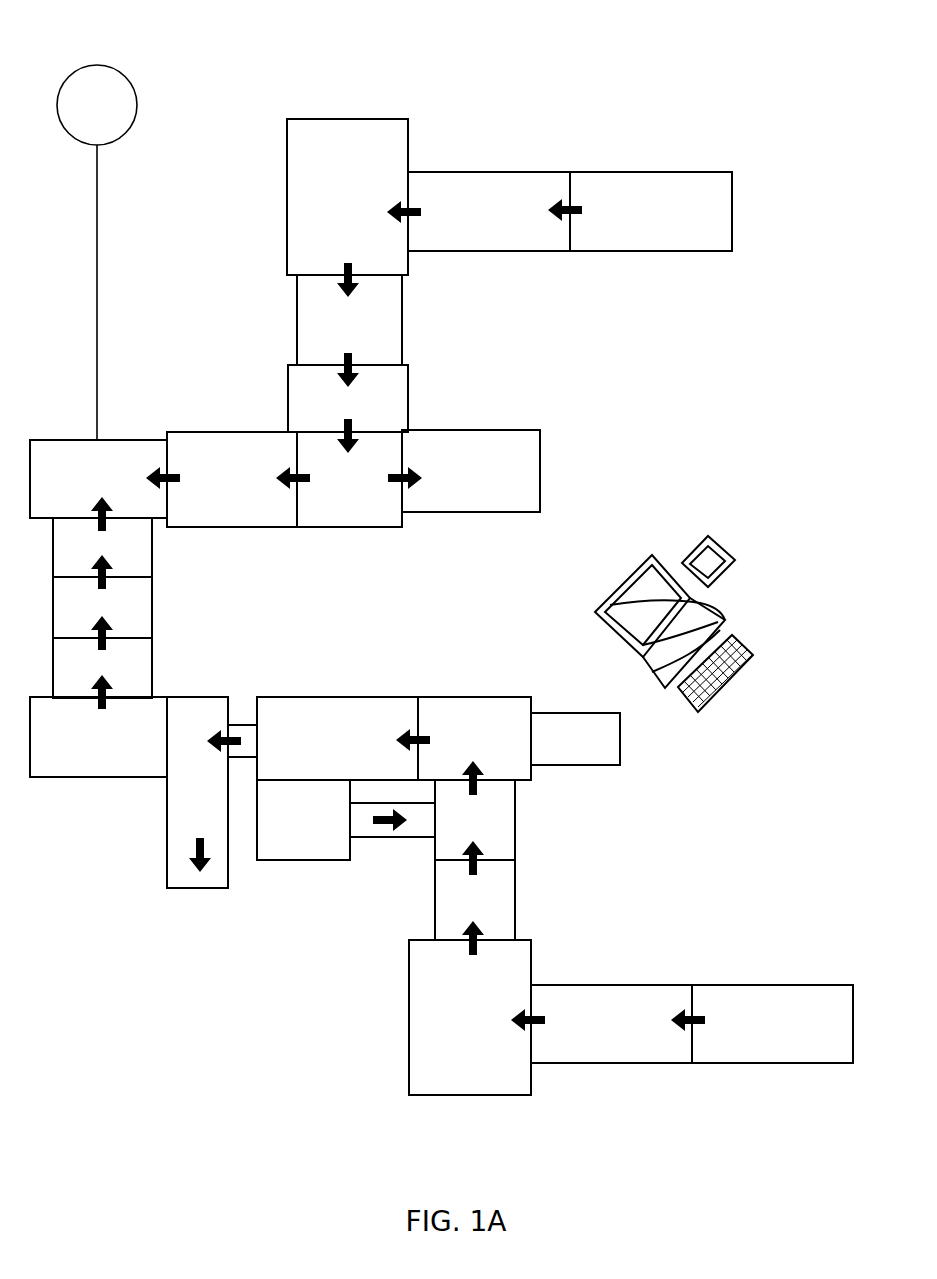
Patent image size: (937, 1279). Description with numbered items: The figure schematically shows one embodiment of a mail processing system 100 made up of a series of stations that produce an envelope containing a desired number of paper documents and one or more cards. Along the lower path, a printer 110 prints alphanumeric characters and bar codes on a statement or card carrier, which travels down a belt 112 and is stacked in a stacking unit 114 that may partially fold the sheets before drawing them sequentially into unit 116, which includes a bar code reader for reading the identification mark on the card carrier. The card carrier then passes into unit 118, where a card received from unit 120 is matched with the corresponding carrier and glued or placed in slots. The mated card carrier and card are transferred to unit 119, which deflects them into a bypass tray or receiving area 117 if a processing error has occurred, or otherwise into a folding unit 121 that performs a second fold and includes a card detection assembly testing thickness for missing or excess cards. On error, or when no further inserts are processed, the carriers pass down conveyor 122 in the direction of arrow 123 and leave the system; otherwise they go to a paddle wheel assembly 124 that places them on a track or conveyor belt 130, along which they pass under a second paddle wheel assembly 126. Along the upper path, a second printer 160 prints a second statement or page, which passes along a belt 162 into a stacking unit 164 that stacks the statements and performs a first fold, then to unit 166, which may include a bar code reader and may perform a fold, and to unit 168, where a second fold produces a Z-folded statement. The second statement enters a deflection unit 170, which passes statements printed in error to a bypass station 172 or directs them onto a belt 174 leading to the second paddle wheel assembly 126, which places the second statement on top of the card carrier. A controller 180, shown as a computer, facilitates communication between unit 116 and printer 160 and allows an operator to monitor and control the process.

The mail processing system 100 is at (692, 124).
The printer 110 is at (756, 1034).
The belt 112 is at (595, 1034).
The stacking unit 114 is at (453, 1029).
The unit 116 is at (456, 911).
The bypass tray or receiving area 117 is at (558, 751).
The unit 118 is at (456, 831).
The unit 119 is at (456, 751).
The unit 120 is at (286, 831).
The folding unit 121 is at (320, 751).
The conveyor 122 is at (181, 804).
The arrow 123 is at (190, 848).
The paddle wheel assembly 124 is at (81, 749).
The second paddle wheel assembly 126 is at (81, 489).
The track or conveyor belt 130 is at (152, 620).
The second printer 160 is at (633, 221).
The belt 162 is at (471, 223).
The stacking unit 164 is at (331, 209).
The unit 166 is at (331, 329).
The unit 168 is at (331, 409).
The deflection unit 170 is at (331, 489).
The bypass station 172 is at (453, 481).
The belt 174 is at (215, 489).
The controller 180 is at (633, 617).